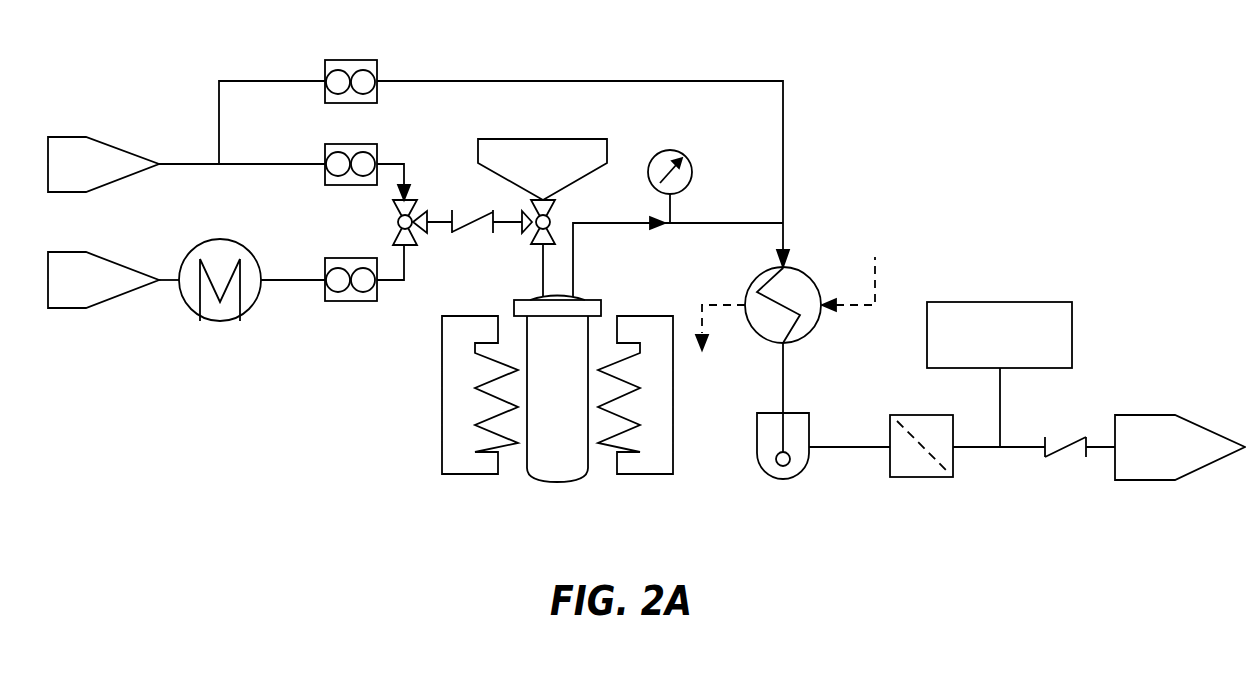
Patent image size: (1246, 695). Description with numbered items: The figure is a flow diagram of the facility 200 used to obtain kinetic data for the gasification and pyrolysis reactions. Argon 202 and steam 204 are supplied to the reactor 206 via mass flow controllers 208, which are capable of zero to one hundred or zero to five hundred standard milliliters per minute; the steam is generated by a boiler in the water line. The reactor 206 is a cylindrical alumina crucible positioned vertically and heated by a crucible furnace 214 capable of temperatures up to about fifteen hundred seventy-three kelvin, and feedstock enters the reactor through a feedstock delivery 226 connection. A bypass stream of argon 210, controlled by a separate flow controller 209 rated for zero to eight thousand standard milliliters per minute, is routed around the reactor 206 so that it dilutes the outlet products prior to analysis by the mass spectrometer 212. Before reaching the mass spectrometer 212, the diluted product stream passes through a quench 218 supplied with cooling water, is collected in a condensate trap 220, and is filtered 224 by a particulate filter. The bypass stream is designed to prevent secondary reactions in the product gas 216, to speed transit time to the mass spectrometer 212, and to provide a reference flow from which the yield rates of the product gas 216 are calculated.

The facility 200 is at (1083, 52).
The argon 202 is at (67, 137).
The steam 204 is at (67, 252).
The reactor 206 is at (588, 299).
The mass flow controllers 208 is at (350, 185).
The flow controller 209 is at (350, 103).
The bypass stream of argon 210 is at (667, 81).
The mass spectrometer 212 is at (1000, 302).
The crucible furnace 214 is at (442, 347).
The product gas 216 is at (1146, 415).
The quench 218 is at (755, 281).
The condensate trap 220 is at (802, 413).
The filter 224 is at (925, 415).
The feedstock delivery 226 is at (543, 139).